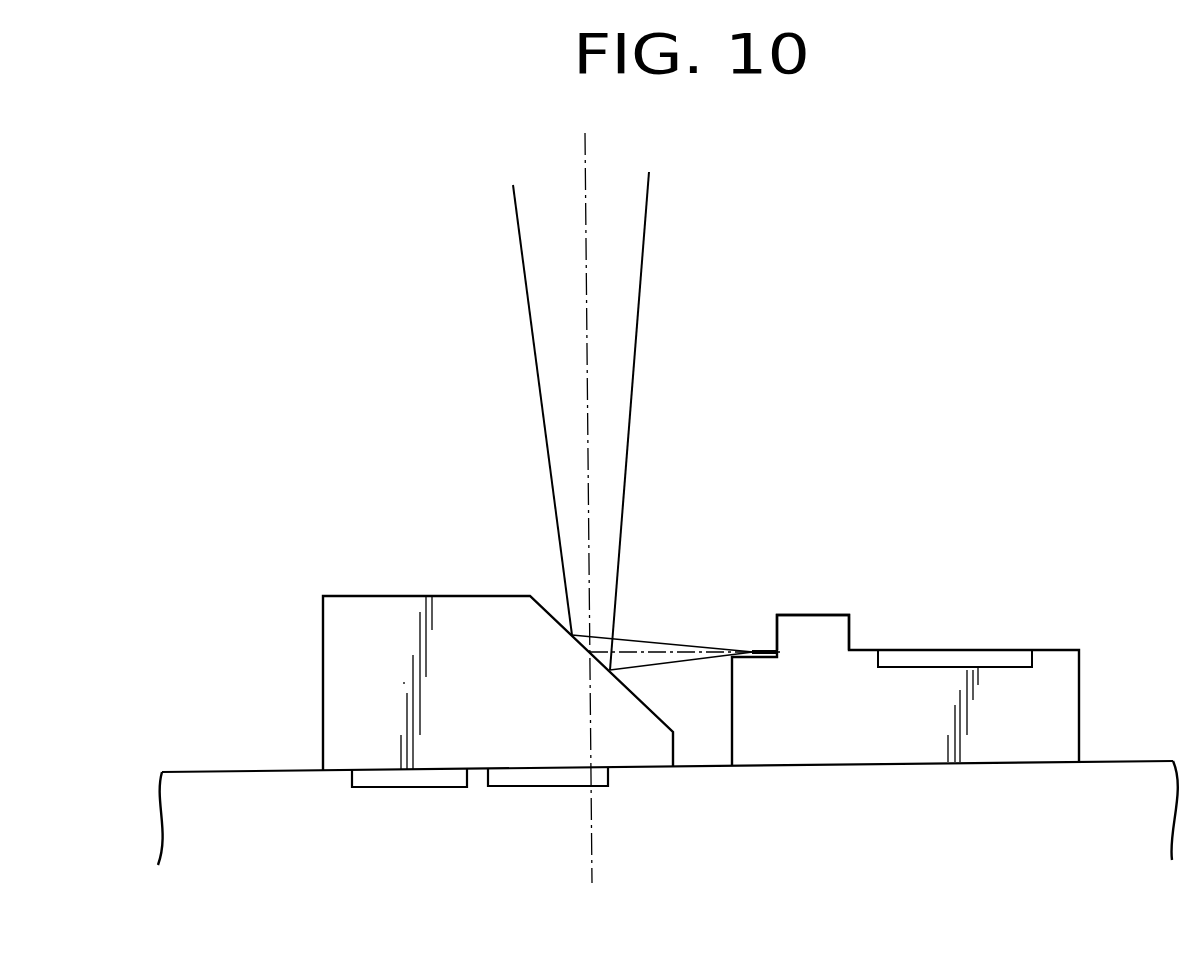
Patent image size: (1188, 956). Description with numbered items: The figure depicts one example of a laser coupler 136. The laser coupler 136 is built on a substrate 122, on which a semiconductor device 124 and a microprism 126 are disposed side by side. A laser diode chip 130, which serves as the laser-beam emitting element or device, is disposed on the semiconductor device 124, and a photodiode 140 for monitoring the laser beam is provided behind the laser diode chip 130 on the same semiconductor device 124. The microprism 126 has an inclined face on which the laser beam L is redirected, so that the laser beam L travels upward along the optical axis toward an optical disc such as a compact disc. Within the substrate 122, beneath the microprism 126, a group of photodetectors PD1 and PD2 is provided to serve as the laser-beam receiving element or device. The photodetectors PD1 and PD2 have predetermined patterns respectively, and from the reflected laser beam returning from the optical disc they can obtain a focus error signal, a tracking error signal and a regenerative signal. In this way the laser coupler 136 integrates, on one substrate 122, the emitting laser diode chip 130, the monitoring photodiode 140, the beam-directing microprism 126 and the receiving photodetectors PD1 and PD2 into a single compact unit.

The substrate 122 is at (1148, 782).
The semiconductor device 124 is at (1057, 678).
The microprism 126 is at (452, 620).
The laser diode chip 130 is at (820, 638).
The laser coupler 136 is at (350, 555).
The photodiode 140 is at (931, 656).
The photodetector PD1 is at (530, 778).
The photodetector PD2 is at (398, 780).
The laser beam L is at (605, 350).